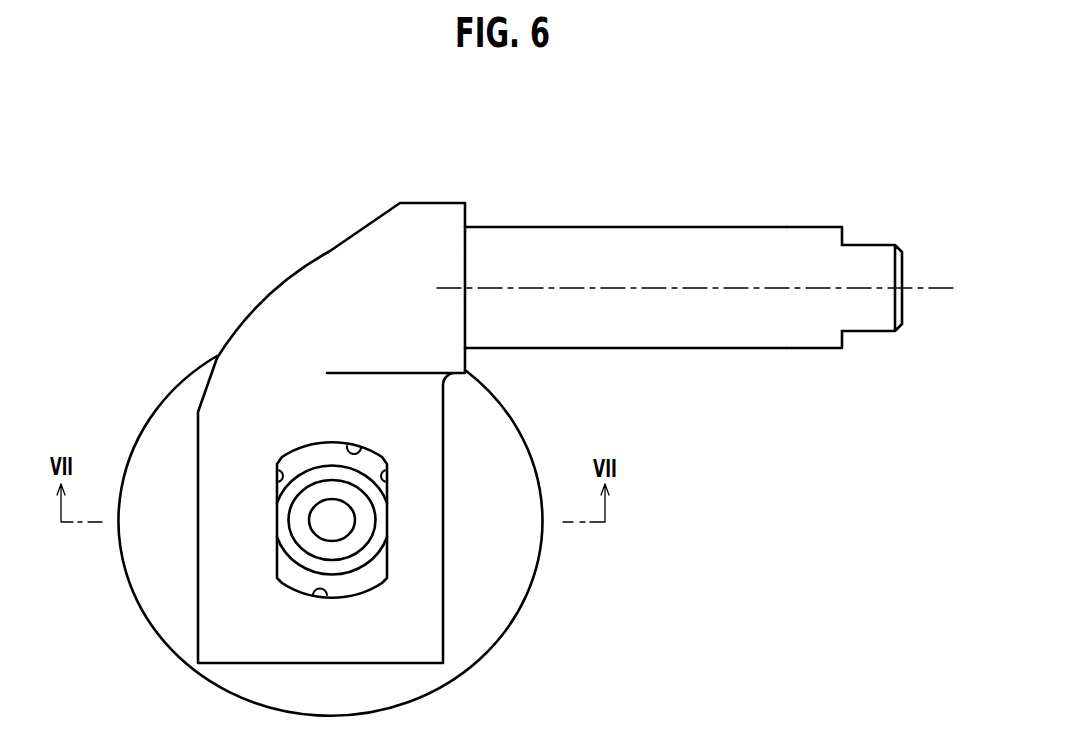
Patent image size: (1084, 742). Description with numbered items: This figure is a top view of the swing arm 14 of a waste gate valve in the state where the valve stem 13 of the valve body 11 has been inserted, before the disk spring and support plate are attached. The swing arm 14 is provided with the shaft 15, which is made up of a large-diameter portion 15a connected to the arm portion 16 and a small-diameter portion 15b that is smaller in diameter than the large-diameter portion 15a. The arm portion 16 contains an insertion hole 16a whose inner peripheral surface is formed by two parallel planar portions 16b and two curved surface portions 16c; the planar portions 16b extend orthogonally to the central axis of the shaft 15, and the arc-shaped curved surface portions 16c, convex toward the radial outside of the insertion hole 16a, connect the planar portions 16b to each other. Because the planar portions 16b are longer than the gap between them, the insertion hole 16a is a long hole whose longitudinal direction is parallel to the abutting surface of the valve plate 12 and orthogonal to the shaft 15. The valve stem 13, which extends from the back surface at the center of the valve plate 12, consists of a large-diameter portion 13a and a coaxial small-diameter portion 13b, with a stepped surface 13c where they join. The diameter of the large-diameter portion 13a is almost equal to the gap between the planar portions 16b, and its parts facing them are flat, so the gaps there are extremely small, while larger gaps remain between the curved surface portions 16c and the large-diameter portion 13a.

The valve body 11 is at (615, 537).
The valve plate 12 is at (533, 537).
The valve stem 13 is at (377, 563).
The large-diameter portion 13a is at (300, 571).
The small-diameter portion 13b is at (287, 518).
The stepped surface 13c is at (379, 546).
The swing arm 14 is at (865, 135).
The shaft 15 is at (907, 172).
The large-diameter portion 15a is at (799, 237).
The small-diameter portion 15b is at (870, 252).
The arm portion 16 is at (410, 263).
The insertion hole 16a is at (284, 427).
The planar portions 16b is at (277, 476).
The curved surface portions 16c is at (348, 446).